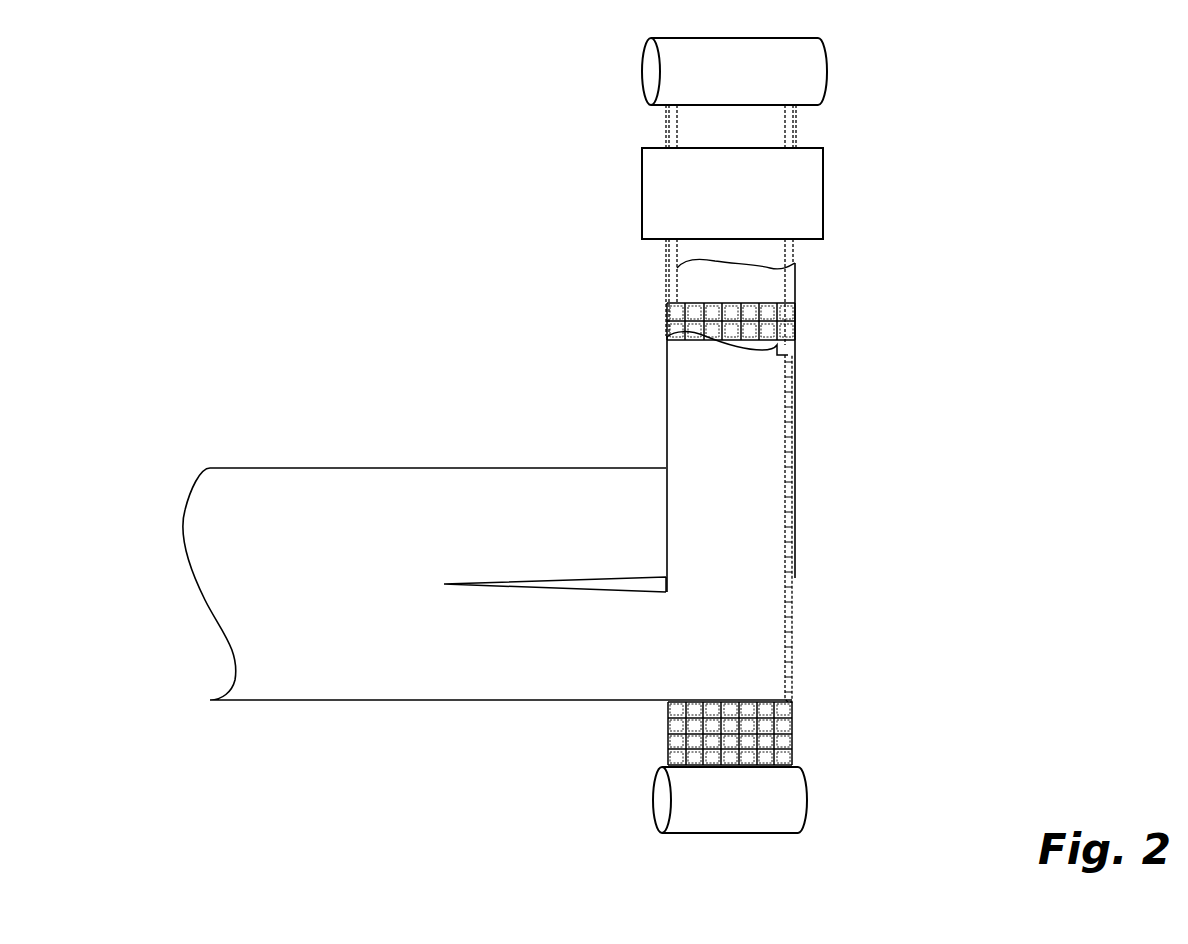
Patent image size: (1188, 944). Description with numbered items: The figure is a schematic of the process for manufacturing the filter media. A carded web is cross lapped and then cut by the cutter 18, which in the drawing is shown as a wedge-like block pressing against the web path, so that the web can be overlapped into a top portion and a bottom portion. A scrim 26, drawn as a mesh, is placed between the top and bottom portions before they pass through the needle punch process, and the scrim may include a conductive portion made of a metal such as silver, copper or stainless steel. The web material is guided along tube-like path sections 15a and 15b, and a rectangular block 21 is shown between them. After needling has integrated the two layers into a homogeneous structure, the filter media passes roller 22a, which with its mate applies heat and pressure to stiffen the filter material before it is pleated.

The roller 22a is at (642, 71).
The heating block 21 is at (642, 189).
The upper tube portion 15b is at (790, 292).
The scrim 26 is at (790, 338).
The lower tube portion 15a is at (765, 402).
The cutter 18 is at (447, 583).